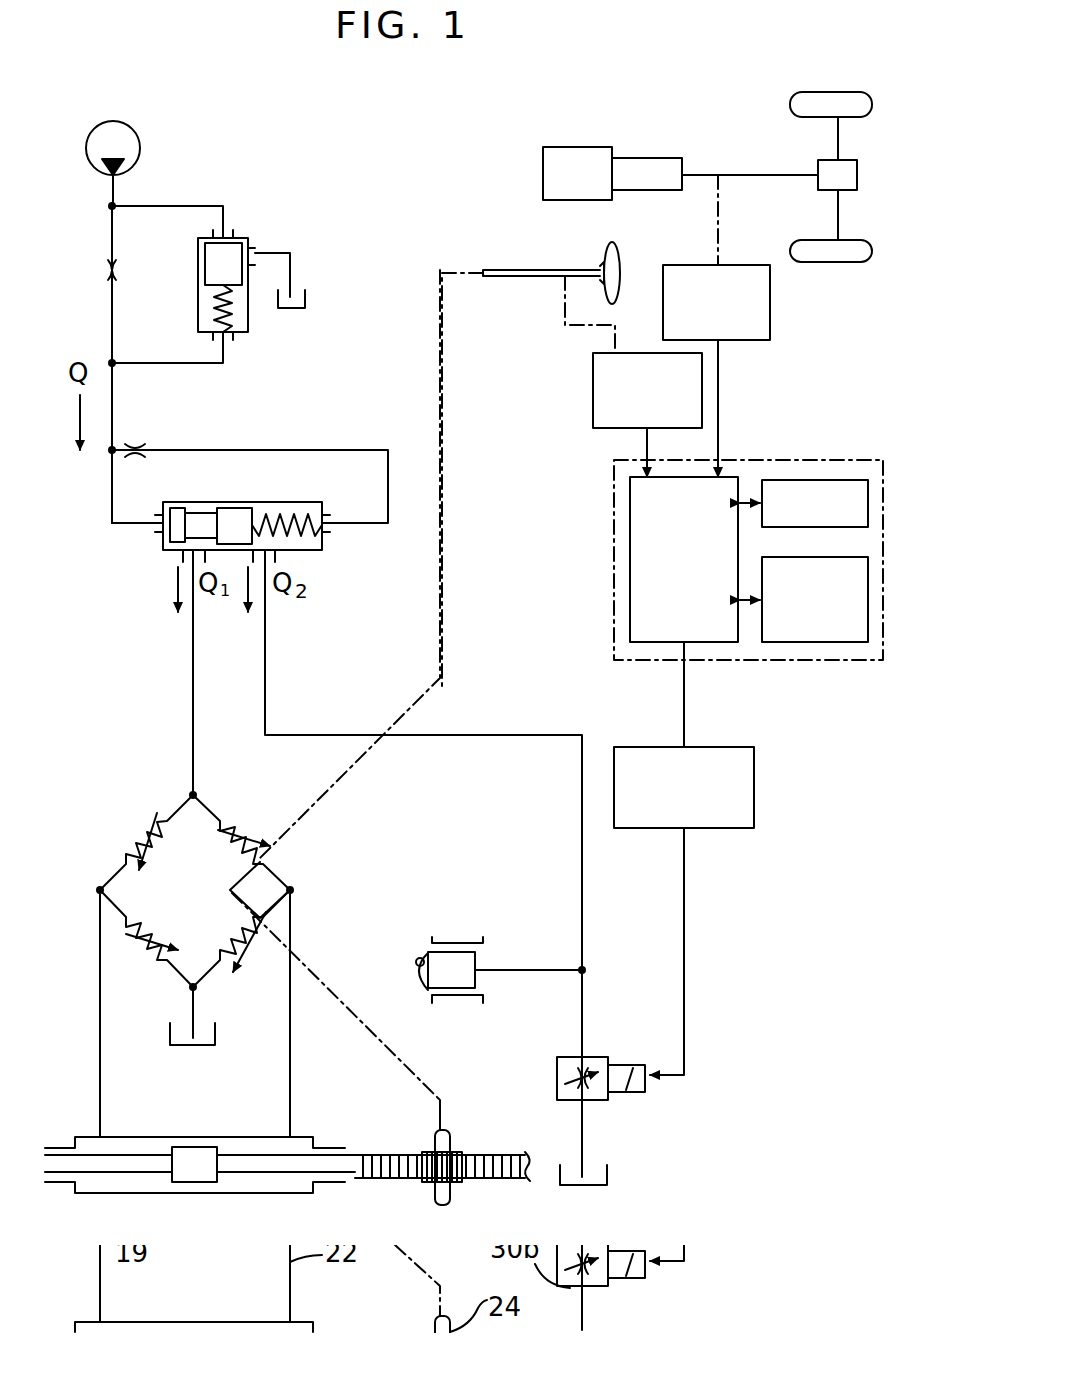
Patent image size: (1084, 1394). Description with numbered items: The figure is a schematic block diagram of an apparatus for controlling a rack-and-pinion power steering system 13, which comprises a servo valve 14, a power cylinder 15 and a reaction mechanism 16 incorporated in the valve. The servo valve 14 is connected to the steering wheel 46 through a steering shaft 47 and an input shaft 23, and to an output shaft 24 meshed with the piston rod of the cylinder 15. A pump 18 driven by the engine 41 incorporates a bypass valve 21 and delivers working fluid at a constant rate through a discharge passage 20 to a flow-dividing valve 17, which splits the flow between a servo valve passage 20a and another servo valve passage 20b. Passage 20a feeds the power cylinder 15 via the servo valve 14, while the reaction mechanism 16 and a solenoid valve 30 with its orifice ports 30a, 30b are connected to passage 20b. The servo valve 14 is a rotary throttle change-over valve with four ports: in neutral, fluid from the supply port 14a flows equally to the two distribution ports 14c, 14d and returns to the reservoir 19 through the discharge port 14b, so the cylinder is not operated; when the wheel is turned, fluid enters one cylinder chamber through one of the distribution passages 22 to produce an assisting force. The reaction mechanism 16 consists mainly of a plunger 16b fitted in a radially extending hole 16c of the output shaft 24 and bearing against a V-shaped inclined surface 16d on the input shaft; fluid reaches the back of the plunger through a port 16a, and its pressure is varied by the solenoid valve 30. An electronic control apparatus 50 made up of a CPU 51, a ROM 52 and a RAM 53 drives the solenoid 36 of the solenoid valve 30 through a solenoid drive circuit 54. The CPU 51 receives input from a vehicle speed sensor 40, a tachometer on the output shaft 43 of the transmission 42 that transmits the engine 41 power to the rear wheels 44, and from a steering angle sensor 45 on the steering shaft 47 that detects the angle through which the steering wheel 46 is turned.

The power steering system 13 is at (380, 882).
The servo valve 14 is at (202, 872).
The supply port 14a is at (193, 795).
The discharge port 14b is at (193, 987).
The distribution port 14c is at (100, 890).
The distribution port 14d is at (290, 890).
The power cylinder 15 is at (300, 1193).
The reaction mechanism 16 is at (461, 937).
The port 16a is at (530, 970).
The plunger 16b is at (458, 982).
The radially extending hole 16c is at (483, 943).
The V-shaped inclined surface 16d is at (415, 960).
The flow-dividing valve 17 is at (282, 502).
The pump 18 is at (140, 144).
The reservoir 19 is at (305, 297).
The discharge passage 20 is at (112, 410).
The servo valve passage 20a is at (193, 692).
The servo valve passage 20b is at (516, 735).
The bypass valve 21 is at (198, 262).
The distribution passage 22 is at (100, 1010).
The input shaft 23 is at (393, 722).
The output shaft 24 is at (450, 1146).
The solenoid valve 30 is at (587, 965).
The valve port 30a is at (580, 1057).
The variable orifice 30b is at (570, 1102).
The solenoid 36 is at (625, 1065).
The vehicle speed sensor 40 is at (752, 265).
The engine 41 is at (593, 150).
The transmission 42 is at (663, 163).
The output shaft 43 is at (752, 175).
The rear wheels 44 is at (845, 262).
The steering angle sensor 45 is at (593, 402).
The steering wheel 46 is at (622, 260).
The steering shaft 47 is at (528, 270).
The electronic control apparatus 50 is at (701, 528).
The CPU 51 is at (630, 490).
The ROM 52 is at (820, 478).
The RAM 53 is at (812, 642).
The solenoid drive circuit 54 is at (754, 782).